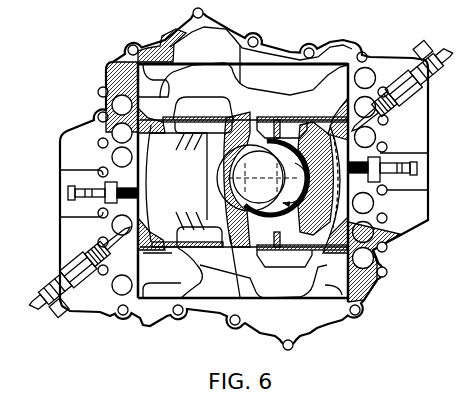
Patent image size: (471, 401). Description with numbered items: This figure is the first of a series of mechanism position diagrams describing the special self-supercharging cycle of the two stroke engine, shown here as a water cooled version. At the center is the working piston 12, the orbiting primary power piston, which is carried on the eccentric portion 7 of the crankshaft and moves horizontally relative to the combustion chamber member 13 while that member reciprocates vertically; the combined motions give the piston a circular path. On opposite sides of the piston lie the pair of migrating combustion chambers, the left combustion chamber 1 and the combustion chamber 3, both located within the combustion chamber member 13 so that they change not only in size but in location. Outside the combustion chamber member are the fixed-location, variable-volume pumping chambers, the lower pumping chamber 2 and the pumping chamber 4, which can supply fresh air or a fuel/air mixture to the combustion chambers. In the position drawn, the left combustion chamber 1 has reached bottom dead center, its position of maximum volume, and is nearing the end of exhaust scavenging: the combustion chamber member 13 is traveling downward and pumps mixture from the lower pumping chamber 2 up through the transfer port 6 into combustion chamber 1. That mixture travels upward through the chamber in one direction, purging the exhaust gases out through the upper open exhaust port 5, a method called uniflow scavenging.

The left combustion chamber 1 is at (176, 183).
The lower pumping chamber 2 is at (242, 282).
The combustion chamber 3 is at (350, 203).
The pumping chamber 4 is at (243, 70).
The upper open exhaust port 5 is at (202, 121).
The transfer port 6 is at (198, 257).
The eccentric portion of the crankshaft 7 is at (356, 127).
The working piston 12 is at (232, 121).
The combustion chamber member 13 is at (202, 68).